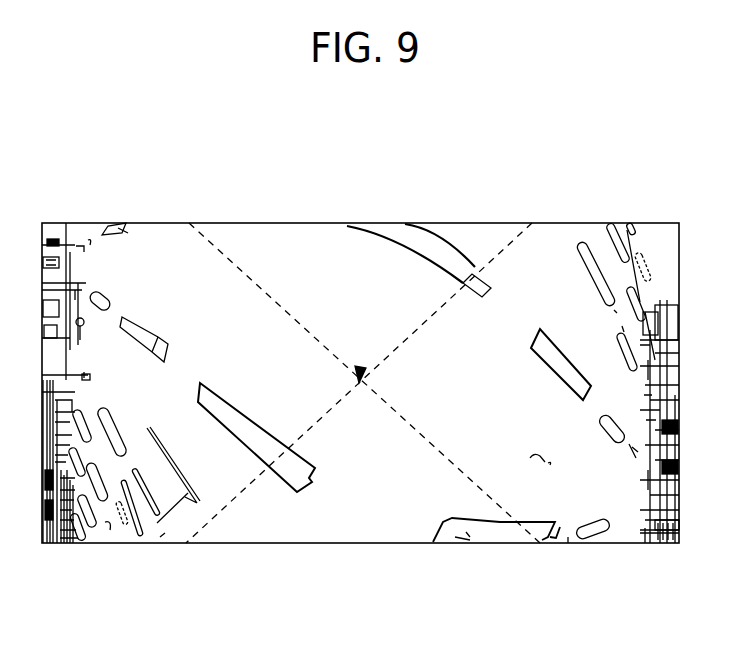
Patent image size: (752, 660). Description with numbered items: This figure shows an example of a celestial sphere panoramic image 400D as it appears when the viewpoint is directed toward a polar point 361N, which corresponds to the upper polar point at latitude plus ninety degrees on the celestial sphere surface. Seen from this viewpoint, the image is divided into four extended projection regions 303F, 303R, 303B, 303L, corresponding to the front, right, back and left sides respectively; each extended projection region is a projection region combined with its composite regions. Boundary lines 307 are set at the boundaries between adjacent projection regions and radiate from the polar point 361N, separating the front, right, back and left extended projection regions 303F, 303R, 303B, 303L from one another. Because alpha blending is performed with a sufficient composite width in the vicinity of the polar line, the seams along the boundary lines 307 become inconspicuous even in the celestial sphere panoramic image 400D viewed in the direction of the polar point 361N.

The celestial sphere panoramic image 400D is at (568, 212).
The boundary line 307 is at (218, 250).
The polar point 361N is at (362, 372).
The extended projection region 303F is at (292, 243).
The extended projection region 303B is at (357, 533).
The extended projection region 303L is at (97, 541).
The extended projection region 303R is at (568, 545).